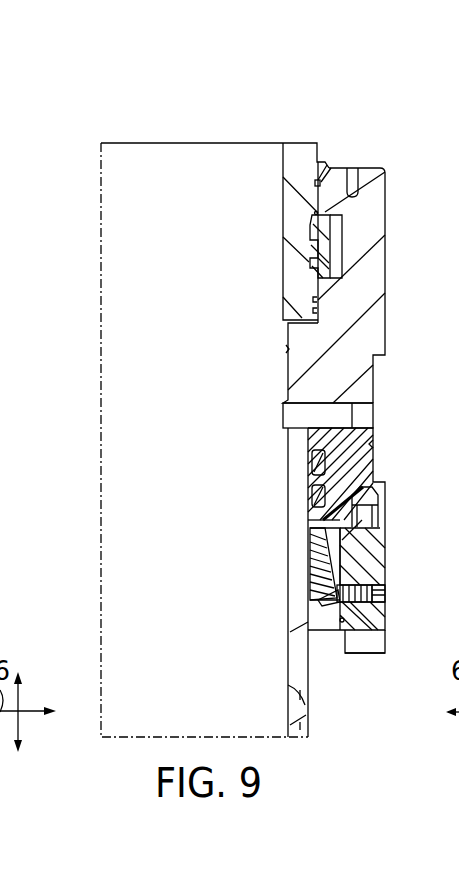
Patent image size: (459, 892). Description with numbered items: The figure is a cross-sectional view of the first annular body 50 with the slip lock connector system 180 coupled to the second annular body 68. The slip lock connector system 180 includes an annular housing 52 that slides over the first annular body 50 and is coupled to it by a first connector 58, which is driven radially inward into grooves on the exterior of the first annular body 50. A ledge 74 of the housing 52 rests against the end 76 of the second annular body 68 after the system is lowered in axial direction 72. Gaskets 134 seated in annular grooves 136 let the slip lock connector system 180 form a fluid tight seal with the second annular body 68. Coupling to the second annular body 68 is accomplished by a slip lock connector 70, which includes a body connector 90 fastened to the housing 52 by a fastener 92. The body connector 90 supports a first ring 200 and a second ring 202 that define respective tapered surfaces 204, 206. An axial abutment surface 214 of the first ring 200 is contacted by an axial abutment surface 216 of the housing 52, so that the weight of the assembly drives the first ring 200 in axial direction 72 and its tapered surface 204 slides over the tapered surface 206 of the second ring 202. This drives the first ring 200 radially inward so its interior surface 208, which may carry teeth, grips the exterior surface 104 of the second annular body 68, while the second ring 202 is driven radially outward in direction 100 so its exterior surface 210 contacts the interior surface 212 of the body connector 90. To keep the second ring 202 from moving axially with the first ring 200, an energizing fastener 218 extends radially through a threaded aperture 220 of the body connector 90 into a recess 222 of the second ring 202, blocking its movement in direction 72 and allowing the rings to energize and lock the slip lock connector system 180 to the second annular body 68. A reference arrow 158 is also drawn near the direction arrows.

The first annular body 50 is at (298, 150).
The slip lock connector system 180 is at (403, 156).
The first connector 58 is at (332, 242).
The housing 52 is at (368, 336).
The ledge 74 is at (297, 430).
The end 76 is at (292, 434).
The gaskets 134 is at (312, 462).
The annular grooves 136 is at (312, 496).
The axial abutment surface 214 is at (292, 507).
The axial abutment surface 216 is at (368, 492).
The first ring 200 is at (312, 540).
The interior surface 208 is at (310, 552).
The tapered surface 204 is at (310, 572).
The recess 222 is at (318, 598).
The exterior surface 210 is at (362, 545).
The interior surface 212 is at (362, 553).
The tapered surface 206 is at (362, 566).
The body connector 90 is at (378, 575).
The fastener 92 is at (362, 604).
The energizing fastener 218 is at (386, 600).
The second ring 202 is at (322, 600).
The aperture 220 is at (372, 603).
The slip lock connector 70 is at (399, 667).
The exterior surface 104 is at (302, 691).
The second annular body 68 is at (302, 722).
The vertical axis 158 is at (20, 697).
The axial direction 72 is at (22, 724).
The direction 100 is at (30, 708).